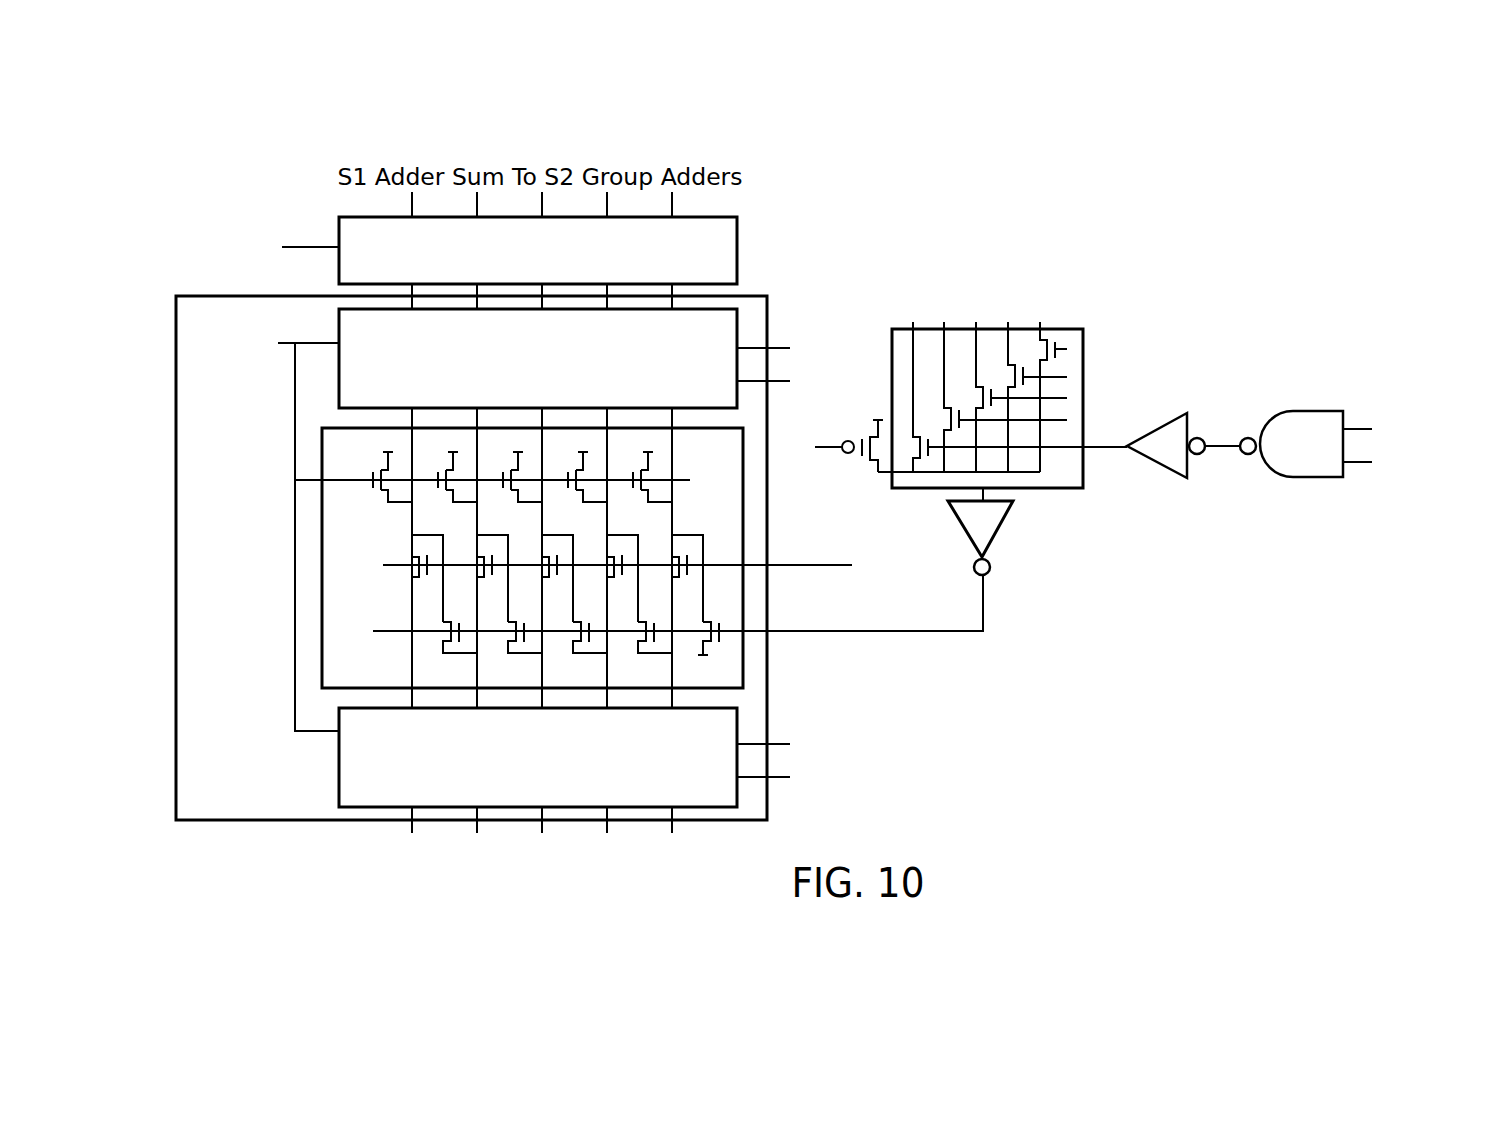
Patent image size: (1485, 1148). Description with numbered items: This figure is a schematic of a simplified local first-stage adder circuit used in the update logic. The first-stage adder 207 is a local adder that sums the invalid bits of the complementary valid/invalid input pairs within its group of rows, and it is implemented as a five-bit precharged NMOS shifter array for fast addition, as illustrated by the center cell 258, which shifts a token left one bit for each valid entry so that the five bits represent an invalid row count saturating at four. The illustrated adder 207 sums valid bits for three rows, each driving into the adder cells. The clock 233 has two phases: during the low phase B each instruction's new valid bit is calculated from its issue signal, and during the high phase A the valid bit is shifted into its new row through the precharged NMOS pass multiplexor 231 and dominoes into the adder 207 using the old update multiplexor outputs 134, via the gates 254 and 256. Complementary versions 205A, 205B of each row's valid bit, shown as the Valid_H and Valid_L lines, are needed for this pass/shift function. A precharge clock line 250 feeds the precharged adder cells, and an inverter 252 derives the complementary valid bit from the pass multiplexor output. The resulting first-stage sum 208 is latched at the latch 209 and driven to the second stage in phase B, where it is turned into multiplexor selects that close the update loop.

The latch 209 is at (740, 230).
The stage 1 sum 208 is at (672, 289).
The stage 1 adder 207 is at (769, 310).
The precharge clock line 250 is at (244, 377).
The center cell 258 is at (376, 553).
The complementary version of valid bit 205A is at (874, 549).
The complementary version of valid bit 205B is at (874, 612).
The precharged NMOS pass multiplexor 231 is at (1085, 357).
The inverter 252 is at (995, 530).
The gate 256 is at (1163, 425).
The gate 254 is at (1293, 411).
The clock 233 is at (1357, 429).
The old update multiplexor outputs 134 is at (1357, 462).